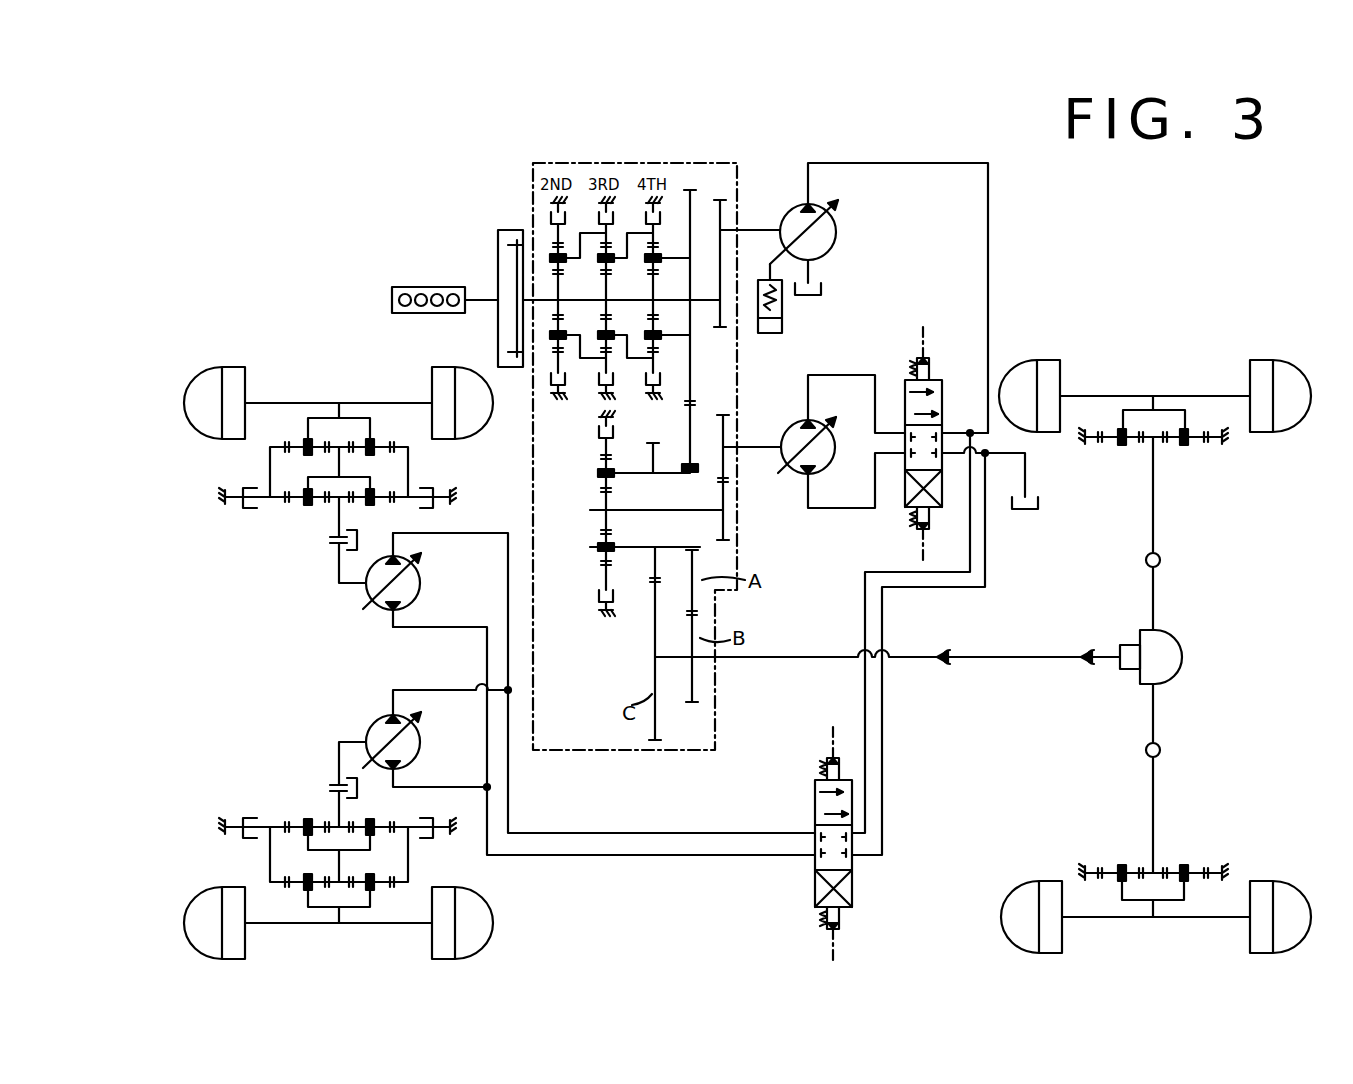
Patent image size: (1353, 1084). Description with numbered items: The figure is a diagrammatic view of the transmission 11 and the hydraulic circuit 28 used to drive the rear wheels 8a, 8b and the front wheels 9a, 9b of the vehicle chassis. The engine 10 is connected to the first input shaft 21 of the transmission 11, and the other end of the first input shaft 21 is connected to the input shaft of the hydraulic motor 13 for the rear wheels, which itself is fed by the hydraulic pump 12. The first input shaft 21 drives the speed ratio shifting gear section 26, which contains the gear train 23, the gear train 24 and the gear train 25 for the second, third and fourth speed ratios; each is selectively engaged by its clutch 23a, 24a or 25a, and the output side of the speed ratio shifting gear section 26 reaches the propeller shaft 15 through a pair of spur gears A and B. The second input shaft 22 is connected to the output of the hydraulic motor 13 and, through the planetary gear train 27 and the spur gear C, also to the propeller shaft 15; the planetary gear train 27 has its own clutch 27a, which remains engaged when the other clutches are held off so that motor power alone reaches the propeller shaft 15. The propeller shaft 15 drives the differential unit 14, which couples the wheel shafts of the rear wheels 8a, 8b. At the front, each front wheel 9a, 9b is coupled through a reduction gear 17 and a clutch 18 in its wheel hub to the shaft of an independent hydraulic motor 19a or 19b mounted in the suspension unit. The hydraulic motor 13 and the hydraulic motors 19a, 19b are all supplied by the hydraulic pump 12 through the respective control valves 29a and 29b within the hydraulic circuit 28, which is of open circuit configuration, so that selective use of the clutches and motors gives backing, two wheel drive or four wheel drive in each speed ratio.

The rear wheel 8a is at (1292, 893).
The rear wheel 8b is at (1290, 362).
The front wheel 9a is at (490, 922).
The front wheel 9b is at (215, 370).
The engine 10 is at (395, 285).
The transmission 11 is at (736, 204).
The hydraulic pump 12 is at (836, 250).
The hydraulic motor 13 is at (790, 428).
The differential unit 14 is at (1180, 648).
The propeller shaft 15 is at (1032, 657).
The reduction gear 17 is at (295, 510).
The clutch 18 is at (333, 545).
The hydraulic motor 19a is at (372, 722).
The hydraulic motor 19b is at (420, 583).
The first input shaft 21 is at (678, 296).
The second input shaft 22 is at (658, 512).
The gear train 23 is at (552, 238).
The clutch 23a is at (540, 230).
The gear train 24 is at (580, 378).
The clutch 24a is at (613, 222).
The gear train 25 is at (645, 375).
The clutch 25a is at (662, 222).
The speed ratio shifting gear section 26 is at (742, 166).
The planetary gear train 27 is at (585, 512).
The clutch 27a is at (598, 596).
The hydraulic circuit 28 is at (1016, 281).
The control valve 29a is at (942, 388).
The control valve 29b is at (815, 800).